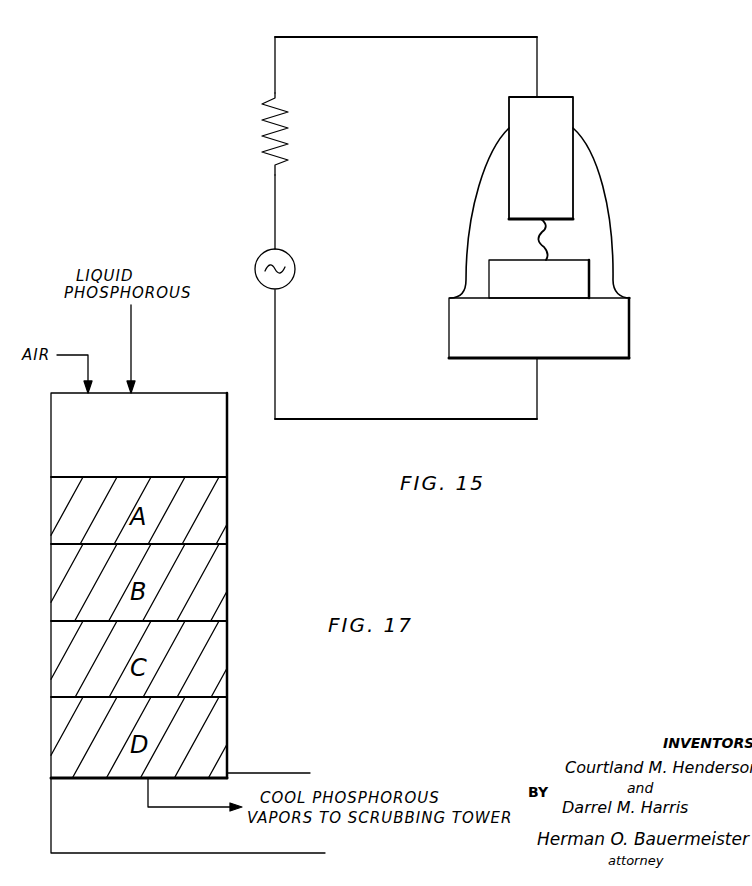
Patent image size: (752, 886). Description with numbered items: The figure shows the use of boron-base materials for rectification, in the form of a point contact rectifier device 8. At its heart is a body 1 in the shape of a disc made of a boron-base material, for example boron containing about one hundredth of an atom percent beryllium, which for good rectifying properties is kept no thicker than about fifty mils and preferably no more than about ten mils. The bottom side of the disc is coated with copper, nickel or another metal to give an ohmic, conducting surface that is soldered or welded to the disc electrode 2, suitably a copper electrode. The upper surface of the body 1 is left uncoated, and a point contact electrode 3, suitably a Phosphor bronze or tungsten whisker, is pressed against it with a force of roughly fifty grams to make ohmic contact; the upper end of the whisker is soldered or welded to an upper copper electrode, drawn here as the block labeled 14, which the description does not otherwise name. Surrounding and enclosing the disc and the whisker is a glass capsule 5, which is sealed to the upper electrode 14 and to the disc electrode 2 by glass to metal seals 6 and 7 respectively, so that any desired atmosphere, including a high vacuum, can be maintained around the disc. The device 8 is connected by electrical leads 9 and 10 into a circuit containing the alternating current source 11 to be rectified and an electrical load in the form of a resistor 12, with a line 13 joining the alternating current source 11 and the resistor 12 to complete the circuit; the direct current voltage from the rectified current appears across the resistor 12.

The body 1 is at (578, 284).
The disc electrode 2 is at (470, 336).
The point contact electrode 3 is at (541, 236).
The glass capsule 5 is at (613, 246).
The glass to metal seal 6 is at (509, 135).
The glass to metal seal 7 is at (463, 294).
The point contact rectifier device 8 is at (607, 186).
The electrical lead 9 is at (378, 37).
The electrical lead 10 is at (400, 419).
The alternating current source 11 is at (262, 254).
The resistor 12 is at (288, 118).
The line 13 is at (276, 220).
The electrode 14 is at (558, 124).